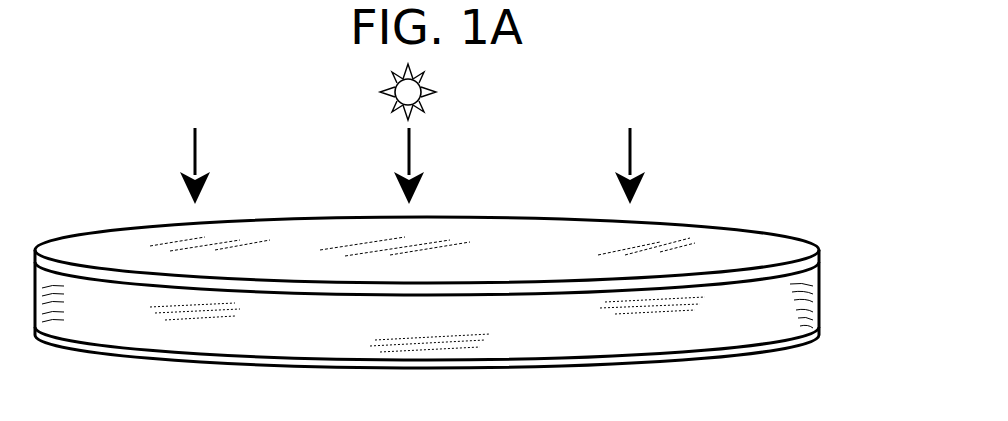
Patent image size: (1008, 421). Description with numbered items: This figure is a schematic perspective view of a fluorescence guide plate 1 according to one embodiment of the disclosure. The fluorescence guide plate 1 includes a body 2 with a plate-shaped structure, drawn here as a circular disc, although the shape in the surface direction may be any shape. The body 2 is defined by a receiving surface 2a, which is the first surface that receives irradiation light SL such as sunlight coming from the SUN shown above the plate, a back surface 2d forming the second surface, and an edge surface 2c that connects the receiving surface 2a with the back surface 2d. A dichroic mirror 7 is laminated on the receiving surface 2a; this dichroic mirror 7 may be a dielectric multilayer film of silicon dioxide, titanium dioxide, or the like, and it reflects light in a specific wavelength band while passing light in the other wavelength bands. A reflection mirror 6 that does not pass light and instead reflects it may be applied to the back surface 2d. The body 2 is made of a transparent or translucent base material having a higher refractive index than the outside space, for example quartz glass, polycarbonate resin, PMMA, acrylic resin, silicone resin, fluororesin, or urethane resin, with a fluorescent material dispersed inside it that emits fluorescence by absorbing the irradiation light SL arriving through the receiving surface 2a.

The fluorescence guide plate 1 is at (104, 180).
The body 2 is at (768, 320).
The receiving surface 2a is at (771, 276).
The edge surface 2c is at (822, 290).
The back surface 2d is at (652, 345).
The reflection mirror 6 is at (826, 333).
The dichroic mirror 7 is at (821, 258).
The irradiation light SL is at (412, 153).
The sun SUN is at (383, 92).